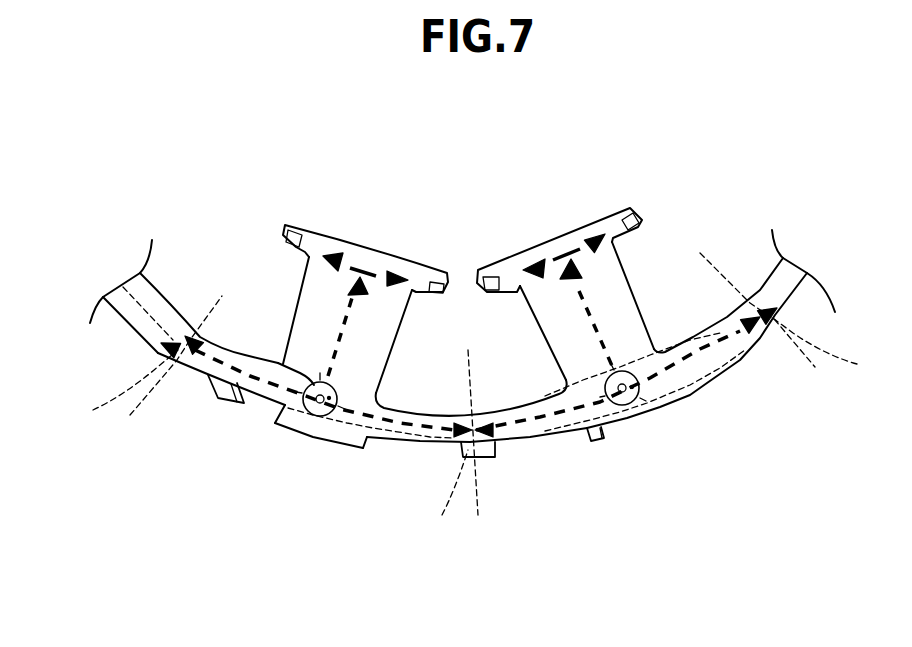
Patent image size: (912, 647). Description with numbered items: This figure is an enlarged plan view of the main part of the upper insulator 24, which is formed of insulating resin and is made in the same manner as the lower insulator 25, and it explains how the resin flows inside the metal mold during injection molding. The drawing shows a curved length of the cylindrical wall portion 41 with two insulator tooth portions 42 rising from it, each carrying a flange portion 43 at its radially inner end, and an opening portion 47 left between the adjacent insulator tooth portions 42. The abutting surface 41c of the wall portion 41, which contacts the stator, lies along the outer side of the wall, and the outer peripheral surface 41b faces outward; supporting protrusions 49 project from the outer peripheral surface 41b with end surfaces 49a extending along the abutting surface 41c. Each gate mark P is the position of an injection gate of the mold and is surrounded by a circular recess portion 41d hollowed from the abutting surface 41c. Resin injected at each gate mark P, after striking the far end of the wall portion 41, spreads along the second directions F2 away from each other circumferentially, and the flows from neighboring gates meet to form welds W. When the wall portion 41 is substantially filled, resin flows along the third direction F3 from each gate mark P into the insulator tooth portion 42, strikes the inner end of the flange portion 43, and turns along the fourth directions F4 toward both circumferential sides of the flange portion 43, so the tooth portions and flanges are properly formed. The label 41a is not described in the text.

The upper insulator 24 is at (462, 324).
The lower insulator 25 is at (462, 393).
The wall portion 41 is at (515, 433).
The yoke inner surface (slot bottom) 41a is at (415, 412).
The outer peripheral surface 41b is at (411, 442).
The abutting surface 41c is at (350, 426).
The recess portion 41d is at (284, 364).
The insulator tooth portion 42 is at (330, 250).
The flange portion 43 is at (287, 224).
The opening portion 47 is at (465, 282).
The supporting protrusion 49 is at (627, 418).
The end surface 49a is at (603, 433).
The second direction F2 is at (260, 382).
The third direction F3 is at (340, 338).
The fourth direction F4 is at (378, 268).
The gate mark P is at (323, 414).
The weld W is at (476, 398).